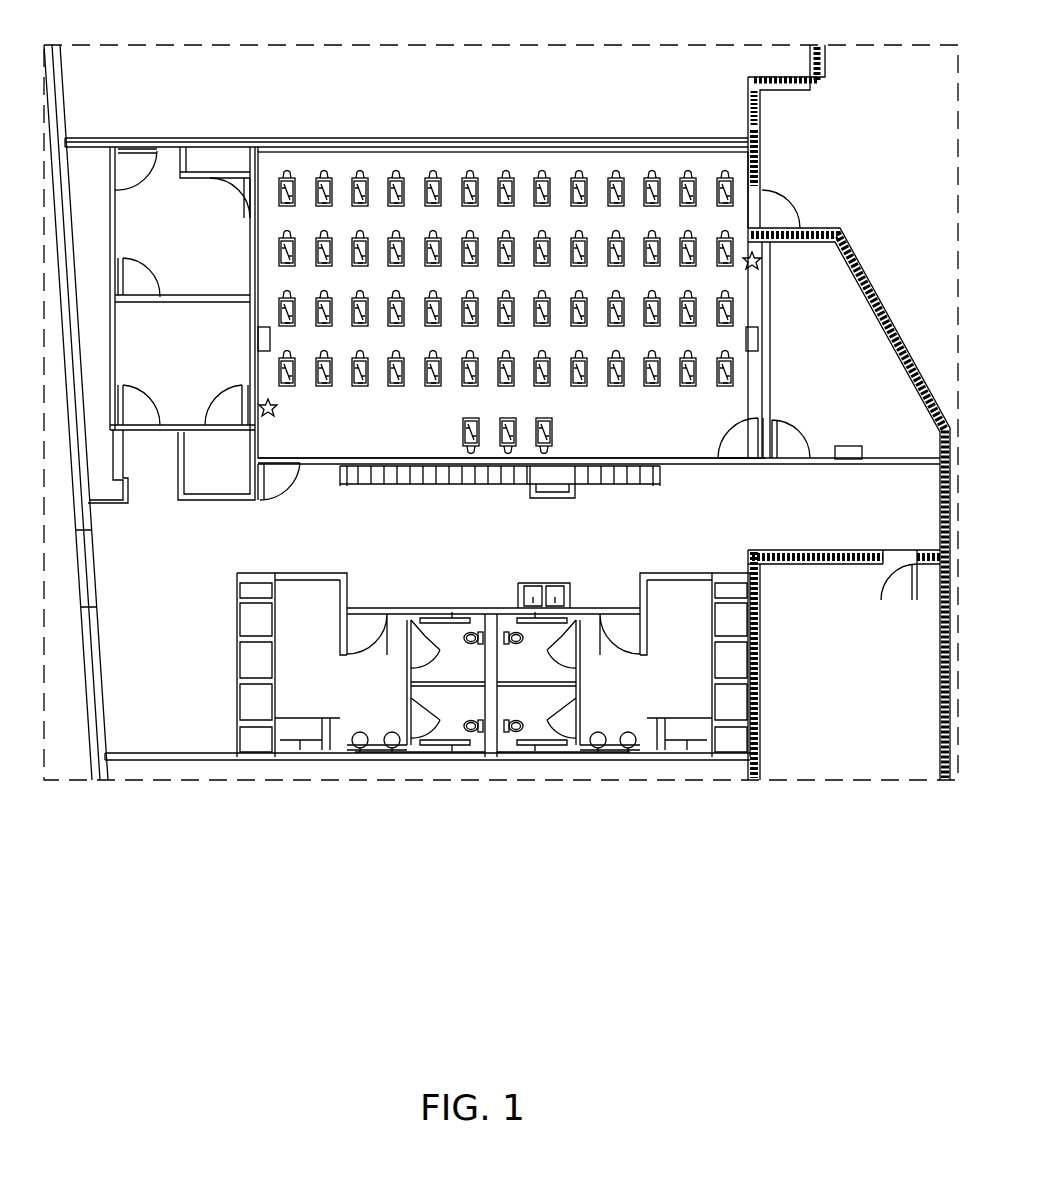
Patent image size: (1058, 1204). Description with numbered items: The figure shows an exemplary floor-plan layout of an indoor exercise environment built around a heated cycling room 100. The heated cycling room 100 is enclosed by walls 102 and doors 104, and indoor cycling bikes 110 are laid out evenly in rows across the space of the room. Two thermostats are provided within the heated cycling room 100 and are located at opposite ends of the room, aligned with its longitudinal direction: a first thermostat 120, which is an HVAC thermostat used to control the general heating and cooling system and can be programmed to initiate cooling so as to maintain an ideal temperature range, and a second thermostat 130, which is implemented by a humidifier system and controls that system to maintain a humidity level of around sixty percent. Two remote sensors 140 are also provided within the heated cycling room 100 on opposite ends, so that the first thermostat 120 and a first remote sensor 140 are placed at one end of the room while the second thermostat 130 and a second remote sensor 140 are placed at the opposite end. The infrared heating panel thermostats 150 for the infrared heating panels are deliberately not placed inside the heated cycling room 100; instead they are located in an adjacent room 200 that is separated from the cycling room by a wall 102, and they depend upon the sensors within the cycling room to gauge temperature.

The heated cycling room 100 is at (667, 170).
The walls 102 is at (348, 137).
The doors 104 is at (735, 462).
The indoor cycling bikes 110 is at (513, 180).
The first thermostat 120 is at (268, 352).
The second thermostat 130 is at (748, 352).
The remote sensors 140 is at (270, 418).
The infrared heating panel thermostats 150 is at (848, 446).
The adjacent room 200 is at (848, 340).